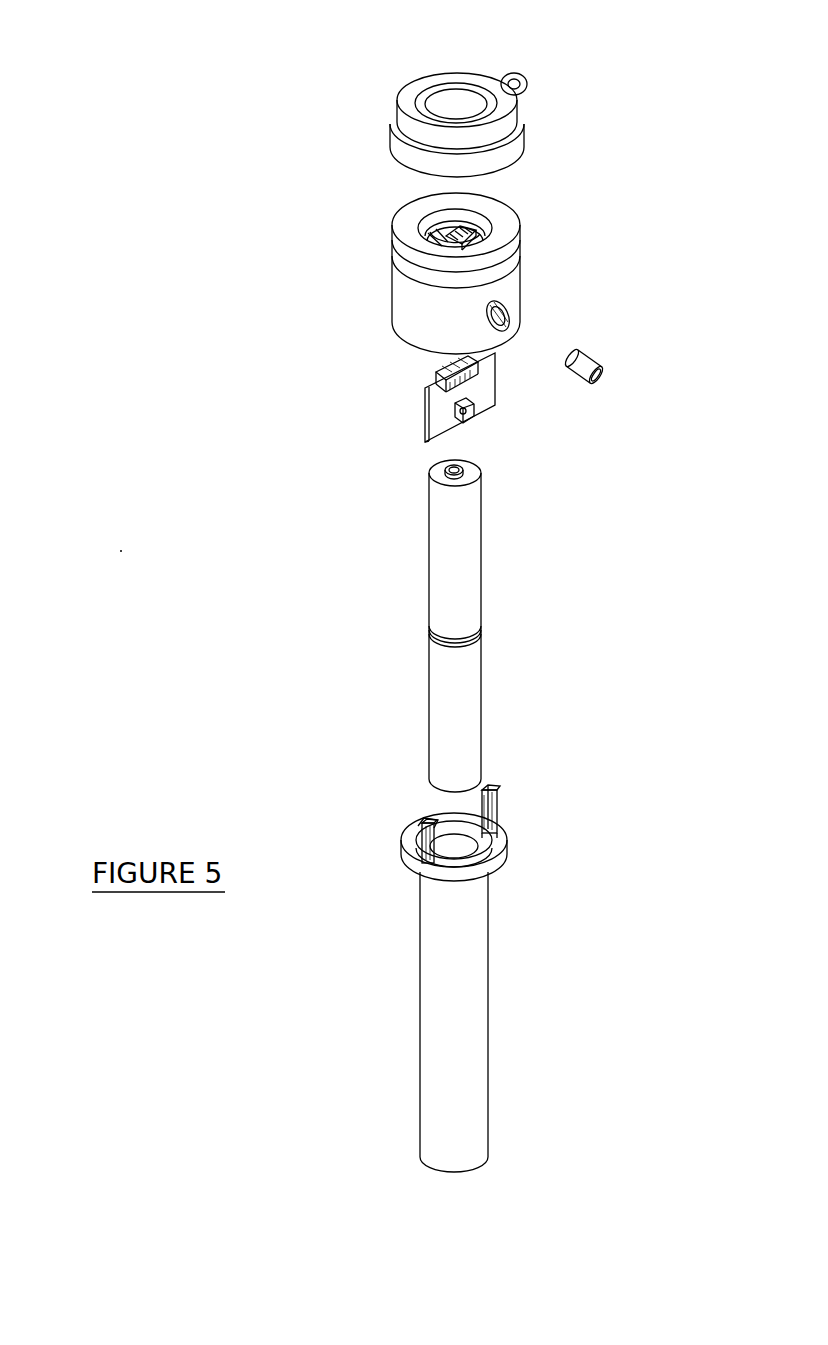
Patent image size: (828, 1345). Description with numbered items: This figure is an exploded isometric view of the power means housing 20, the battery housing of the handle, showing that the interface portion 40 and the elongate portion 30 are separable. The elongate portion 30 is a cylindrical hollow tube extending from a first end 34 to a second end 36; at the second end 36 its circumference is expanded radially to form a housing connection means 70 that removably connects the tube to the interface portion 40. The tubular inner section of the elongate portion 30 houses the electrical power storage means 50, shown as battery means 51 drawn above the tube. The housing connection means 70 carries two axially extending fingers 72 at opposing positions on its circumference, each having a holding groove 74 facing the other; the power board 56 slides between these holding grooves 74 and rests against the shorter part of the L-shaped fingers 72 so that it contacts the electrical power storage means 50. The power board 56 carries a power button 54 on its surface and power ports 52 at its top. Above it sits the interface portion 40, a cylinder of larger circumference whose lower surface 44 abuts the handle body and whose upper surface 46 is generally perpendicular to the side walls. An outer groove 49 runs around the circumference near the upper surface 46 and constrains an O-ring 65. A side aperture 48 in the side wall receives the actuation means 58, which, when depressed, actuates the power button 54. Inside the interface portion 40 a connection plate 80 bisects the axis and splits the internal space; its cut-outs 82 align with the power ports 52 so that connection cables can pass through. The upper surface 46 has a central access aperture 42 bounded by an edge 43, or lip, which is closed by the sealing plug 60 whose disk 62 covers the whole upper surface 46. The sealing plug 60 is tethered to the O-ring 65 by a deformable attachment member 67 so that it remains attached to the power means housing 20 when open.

The power means housing 20 is at (176, 551).
The elongate portion 30 is at (476, 1071).
The first end 34 is at (486, 1165).
The second end 36 is at (430, 820).
The interface portion 40 is at (393, 311).
The access aperture 42 is at (472, 222).
The edge 43 is at (490, 235).
The lower surface 44 is at (425, 353).
The upper surface 46 is at (392, 219).
The side aperture 48 is at (510, 312).
The outer groove 49 is at (392, 263).
The electrical power storage means 50 is at (521, 628).
The battery means 51 is at (440, 565).
The power ports 52 is at (436, 373).
The power button 54 is at (475, 420).
The power board 56 is at (436, 413).
The actuation means 58 is at (608, 370).
The sealing plug 60 is at (425, 60).
The disk 62 is at (420, 97).
The O-ring 65 is at (524, 133).
The deformable attachment member 67 is at (524, 83).
The housing connection means 70 is at (508, 858).
The extending fingers 72 is at (498, 797).
The holding grooves 74 is at (496, 792).
The connection plate 80 is at (440, 230).
The cut-outs 82 is at (473, 227).